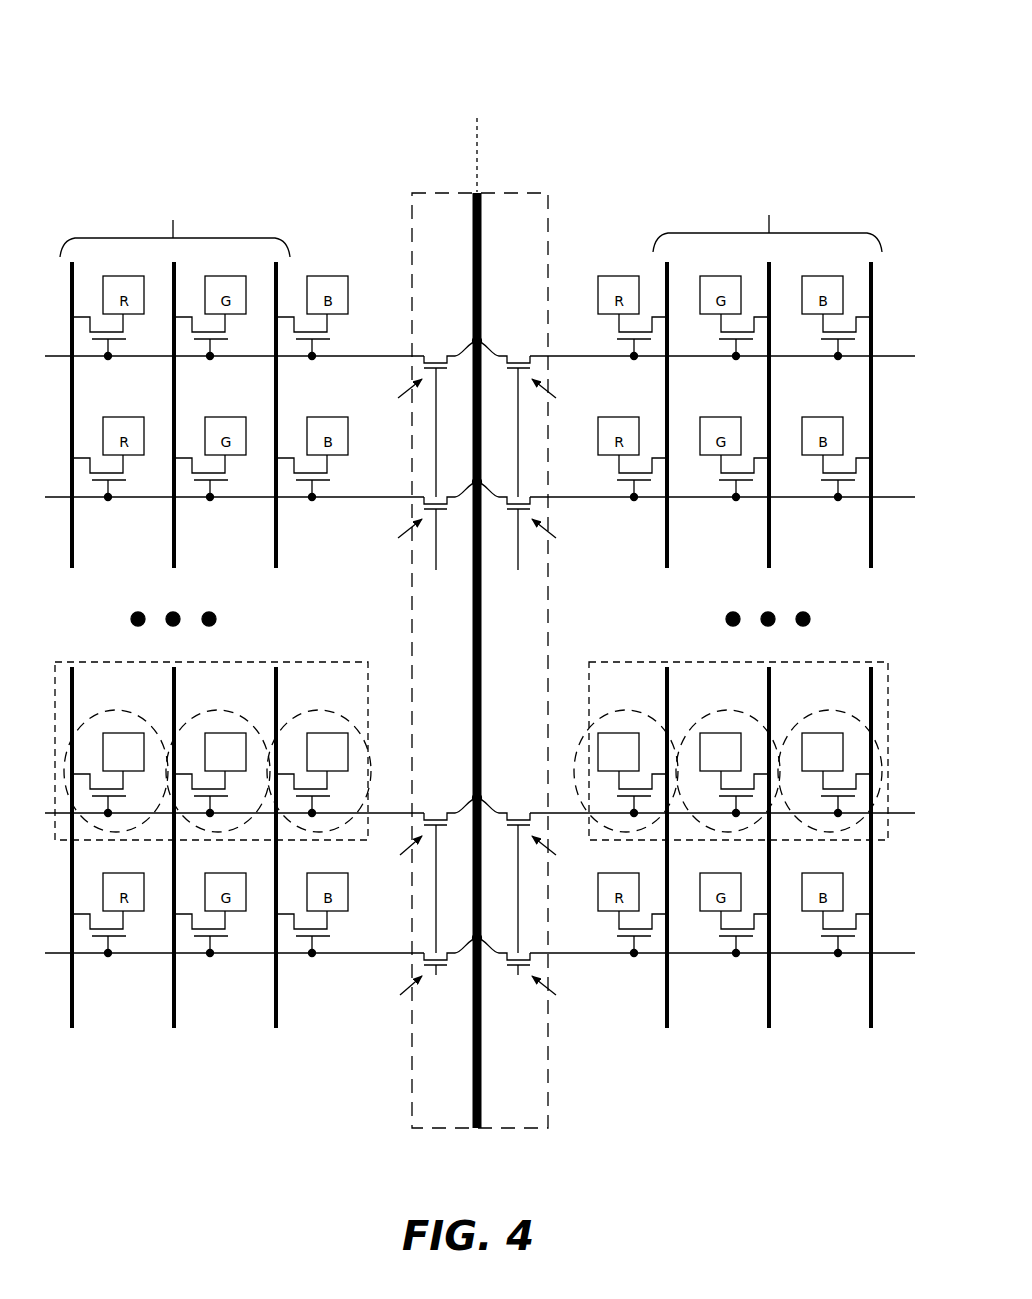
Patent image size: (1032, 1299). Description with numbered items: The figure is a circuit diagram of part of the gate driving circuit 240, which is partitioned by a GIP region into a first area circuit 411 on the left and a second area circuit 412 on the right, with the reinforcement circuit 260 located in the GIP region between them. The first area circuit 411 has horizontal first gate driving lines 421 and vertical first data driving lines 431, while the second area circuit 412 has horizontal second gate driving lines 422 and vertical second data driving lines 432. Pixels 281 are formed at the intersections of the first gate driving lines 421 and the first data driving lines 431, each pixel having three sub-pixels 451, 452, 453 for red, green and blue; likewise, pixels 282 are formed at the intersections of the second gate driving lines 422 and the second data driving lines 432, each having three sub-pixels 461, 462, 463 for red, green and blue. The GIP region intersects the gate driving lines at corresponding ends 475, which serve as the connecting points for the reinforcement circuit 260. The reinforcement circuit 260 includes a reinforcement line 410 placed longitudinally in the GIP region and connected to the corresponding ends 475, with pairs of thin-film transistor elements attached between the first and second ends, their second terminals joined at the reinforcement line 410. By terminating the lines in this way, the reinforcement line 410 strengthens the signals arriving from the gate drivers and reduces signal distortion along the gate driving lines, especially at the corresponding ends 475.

The gate driving circuit 240 is at (197, 66).
The first area circuit 411 is at (472, 130).
The second area circuit 412 is at (482, 130).
The reinforcement circuit 260 is at (416, 244).
The reinforcement line 410 is at (492, 1073).
The corresponding ends 475 is at (396, 356).
The first gate driving lines 421 is at (352, 505).
The second gate driving lines 422 is at (567, 505).
The first data driving lines 431 is at (84, 1019).
The second data driving lines 432 is at (858, 1016).
The pixels 281 is at (258, 848).
The pixels 282 is at (683, 848).
The sub-pixel 451 is at (109, 710).
The sub-pixel 452 is at (211, 710).
The sub-pixel 453 is at (313, 710).
The sub-pixel 461 is at (622, 712).
The sub-pixel 462 is at (722, 712).
The sub-pixel 463 is at (823, 712).